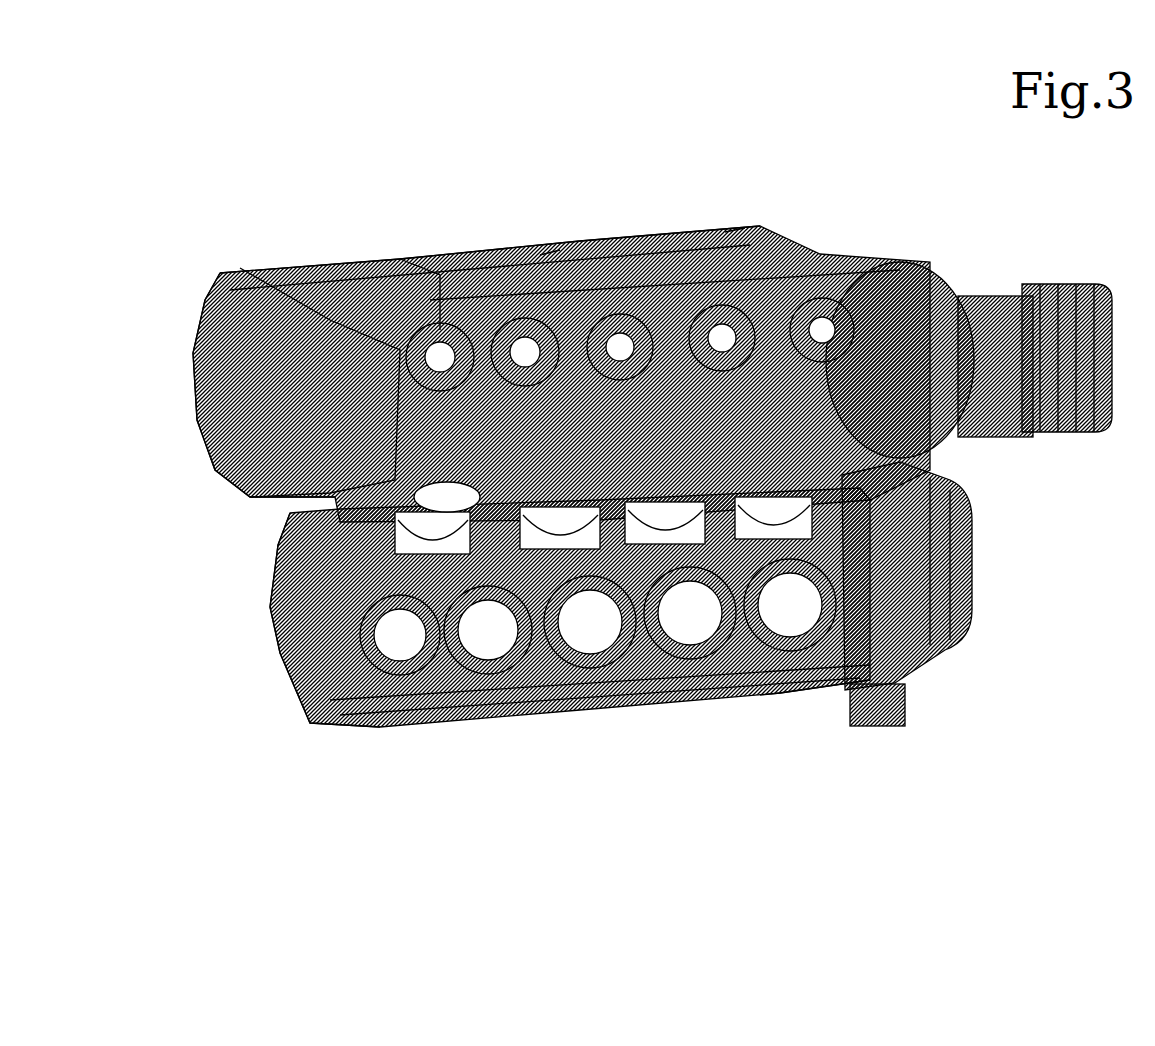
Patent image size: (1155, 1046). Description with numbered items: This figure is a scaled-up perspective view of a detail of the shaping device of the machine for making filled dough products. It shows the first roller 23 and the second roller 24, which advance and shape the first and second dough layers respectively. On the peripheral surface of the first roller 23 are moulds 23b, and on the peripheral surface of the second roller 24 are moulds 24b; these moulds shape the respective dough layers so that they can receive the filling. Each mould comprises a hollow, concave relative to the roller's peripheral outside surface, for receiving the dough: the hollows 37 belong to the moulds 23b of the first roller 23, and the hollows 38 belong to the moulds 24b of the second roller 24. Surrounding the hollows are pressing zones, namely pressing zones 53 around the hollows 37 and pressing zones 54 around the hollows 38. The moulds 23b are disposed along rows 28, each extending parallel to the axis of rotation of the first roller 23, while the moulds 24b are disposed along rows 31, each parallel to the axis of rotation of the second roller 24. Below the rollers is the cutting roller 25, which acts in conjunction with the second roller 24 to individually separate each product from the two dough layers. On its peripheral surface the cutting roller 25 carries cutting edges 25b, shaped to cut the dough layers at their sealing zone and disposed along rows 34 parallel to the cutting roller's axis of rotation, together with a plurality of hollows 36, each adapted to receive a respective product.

The first roller 23 is at (196, 297).
The moulds 23b is at (232, 284).
The second roller 24 is at (370, 335).
The moulds 24b is at (737, 305).
The cutting roller 25 is at (260, 655).
The cutting edges 25b is at (433, 713).
The rows 28 is at (633, 217).
The rows 31 is at (863, 290).
The rows 34 is at (579, 722).
The hollows 36 is at (492, 717).
The hollows 37 is at (586, 240).
The hollows 38 is at (732, 336).
The pressing zones 53 is at (542, 252).
The pressing zones 54 is at (869, 355).